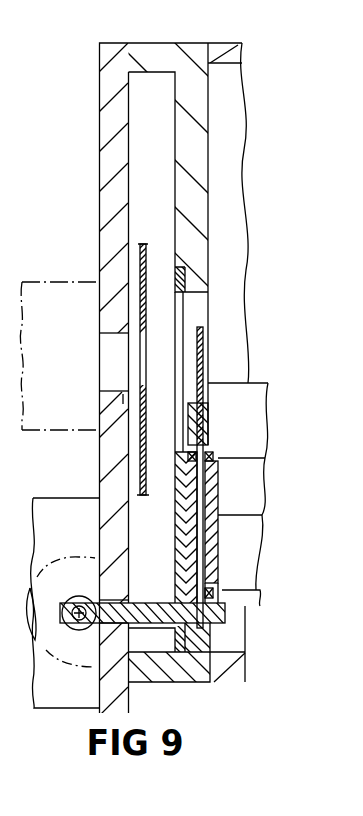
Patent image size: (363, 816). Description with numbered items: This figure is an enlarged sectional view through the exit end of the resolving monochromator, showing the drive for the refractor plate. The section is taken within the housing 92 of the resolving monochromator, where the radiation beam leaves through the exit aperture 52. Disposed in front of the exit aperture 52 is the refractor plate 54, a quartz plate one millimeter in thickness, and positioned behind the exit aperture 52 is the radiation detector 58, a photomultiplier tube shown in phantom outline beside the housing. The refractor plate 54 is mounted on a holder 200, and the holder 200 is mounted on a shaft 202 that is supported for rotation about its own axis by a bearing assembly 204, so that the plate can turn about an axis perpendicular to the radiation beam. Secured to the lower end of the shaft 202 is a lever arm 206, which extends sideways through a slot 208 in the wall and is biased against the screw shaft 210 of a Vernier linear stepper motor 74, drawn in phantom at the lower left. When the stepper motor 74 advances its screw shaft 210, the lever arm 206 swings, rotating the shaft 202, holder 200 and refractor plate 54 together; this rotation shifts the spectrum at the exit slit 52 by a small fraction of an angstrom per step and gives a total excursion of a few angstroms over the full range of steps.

The housing of resolving monochromator 92 is at (153, 43).
The radiation detector 58 is at (36, 282).
The exit aperture 52 is at (140, 358).
The refractor plate 54 is at (200, 355).
The holder 200 is at (210, 422).
The bearing assembly 204 is at (216, 457).
The shaft 202 is at (205, 532).
The lever arm 206 is at (153, 625).
The screw shaft 210 is at (66, 612).
The slot 208 is at (100, 628).
The Vernier linear stepper motor 74 is at (68, 557).